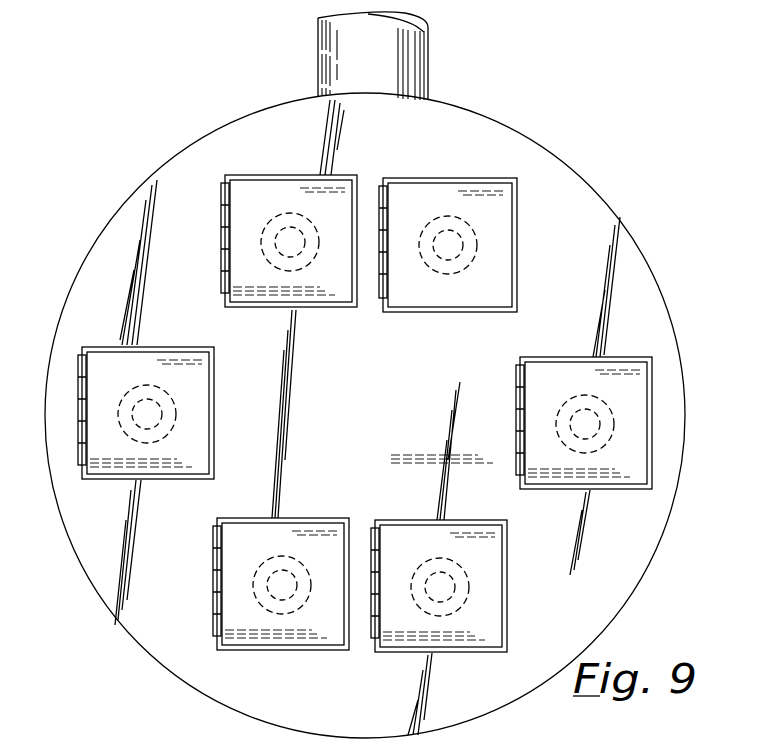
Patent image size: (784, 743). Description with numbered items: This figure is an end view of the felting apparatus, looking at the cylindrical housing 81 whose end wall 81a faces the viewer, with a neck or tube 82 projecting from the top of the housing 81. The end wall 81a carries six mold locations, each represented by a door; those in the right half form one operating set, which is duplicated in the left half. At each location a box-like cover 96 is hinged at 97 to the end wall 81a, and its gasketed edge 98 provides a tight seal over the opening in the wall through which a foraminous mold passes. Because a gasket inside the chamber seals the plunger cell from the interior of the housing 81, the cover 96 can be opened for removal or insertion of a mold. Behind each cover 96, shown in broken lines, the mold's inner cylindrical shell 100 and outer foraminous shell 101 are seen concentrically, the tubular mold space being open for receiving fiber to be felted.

The cylindrical housing 81 is at (178, 153).
The end wall 81a is at (112, 245).
The neck tube 82 is at (432, 58).
The box-like cover 96 is at (497, 244).
The hinge 97 is at (378, 304).
The gasketed edge 98 is at (452, 178).
The inner cylindrical shell 100 is at (462, 250).
The outer foraminous shell 101 is at (475, 234).